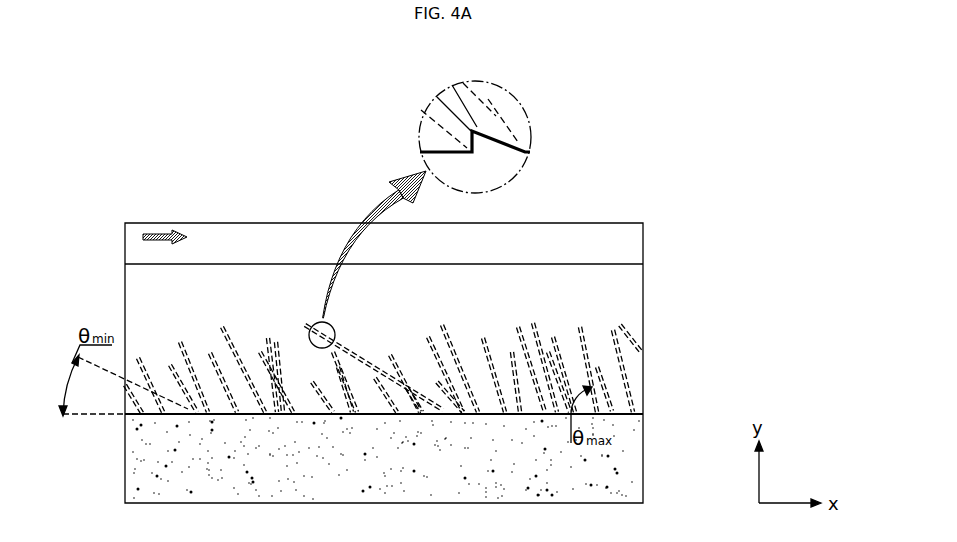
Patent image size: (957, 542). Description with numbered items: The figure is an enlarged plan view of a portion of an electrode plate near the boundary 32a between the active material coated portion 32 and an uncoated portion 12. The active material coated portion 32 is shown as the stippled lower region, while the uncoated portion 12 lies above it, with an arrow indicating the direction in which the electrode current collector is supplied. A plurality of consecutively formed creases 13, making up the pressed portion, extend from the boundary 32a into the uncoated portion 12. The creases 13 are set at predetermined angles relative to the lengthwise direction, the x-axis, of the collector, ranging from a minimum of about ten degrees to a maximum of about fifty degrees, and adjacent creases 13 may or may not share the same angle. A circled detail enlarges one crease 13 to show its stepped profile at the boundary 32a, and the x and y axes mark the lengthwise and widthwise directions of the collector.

The uncoated portion 12 is at (637, 287).
The creases 13 is at (479, 110).
The boundary 32a is at (643, 404).
The active material coated portion 32 is at (642, 468).